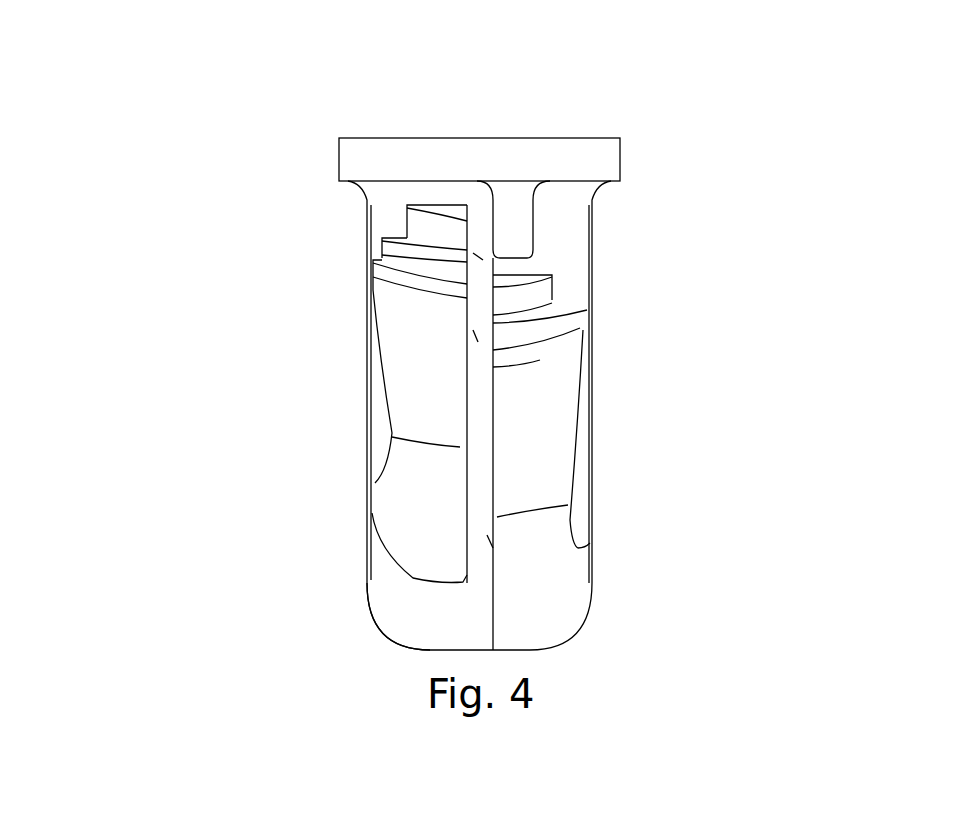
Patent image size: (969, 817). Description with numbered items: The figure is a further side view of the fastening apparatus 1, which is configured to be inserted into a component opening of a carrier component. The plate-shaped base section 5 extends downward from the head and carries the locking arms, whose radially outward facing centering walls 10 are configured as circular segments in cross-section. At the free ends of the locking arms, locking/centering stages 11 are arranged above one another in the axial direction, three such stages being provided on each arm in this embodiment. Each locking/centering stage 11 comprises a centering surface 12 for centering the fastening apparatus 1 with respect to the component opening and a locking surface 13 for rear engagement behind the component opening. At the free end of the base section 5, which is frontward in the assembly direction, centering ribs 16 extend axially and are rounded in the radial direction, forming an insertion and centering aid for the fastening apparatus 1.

The fastening apparatus 1 is at (146, 70).
The base section 5 is at (572, 203).
The centering wall 10 is at (404, 404).
The locking/centering stage 11 is at (402, 221).
The centering surface 12 is at (540, 291).
The locking surface 13 is at (517, 277).
The centering rib 16 is at (375, 629).